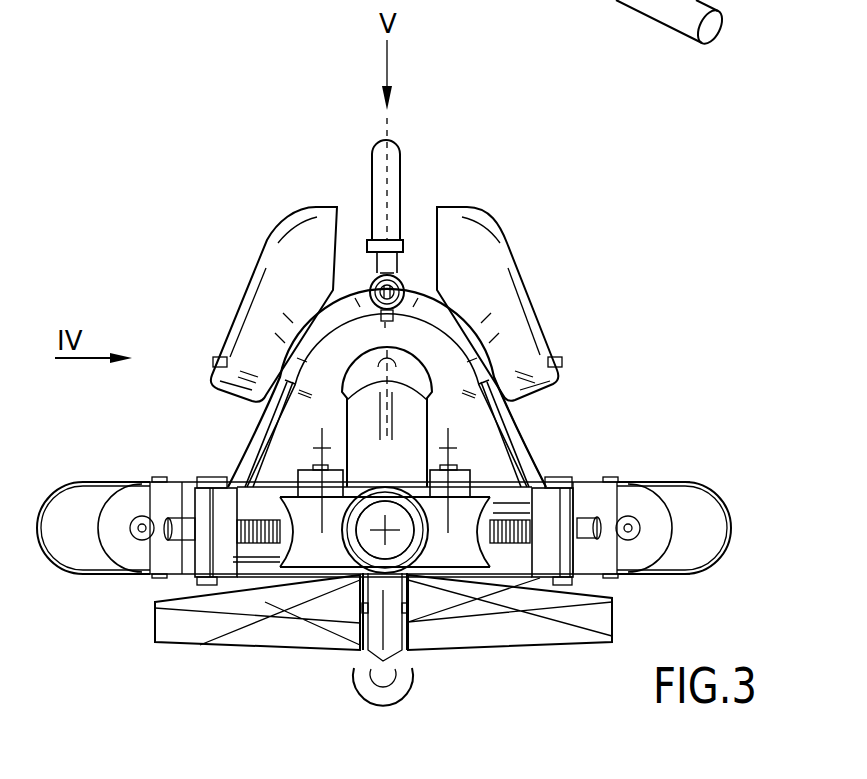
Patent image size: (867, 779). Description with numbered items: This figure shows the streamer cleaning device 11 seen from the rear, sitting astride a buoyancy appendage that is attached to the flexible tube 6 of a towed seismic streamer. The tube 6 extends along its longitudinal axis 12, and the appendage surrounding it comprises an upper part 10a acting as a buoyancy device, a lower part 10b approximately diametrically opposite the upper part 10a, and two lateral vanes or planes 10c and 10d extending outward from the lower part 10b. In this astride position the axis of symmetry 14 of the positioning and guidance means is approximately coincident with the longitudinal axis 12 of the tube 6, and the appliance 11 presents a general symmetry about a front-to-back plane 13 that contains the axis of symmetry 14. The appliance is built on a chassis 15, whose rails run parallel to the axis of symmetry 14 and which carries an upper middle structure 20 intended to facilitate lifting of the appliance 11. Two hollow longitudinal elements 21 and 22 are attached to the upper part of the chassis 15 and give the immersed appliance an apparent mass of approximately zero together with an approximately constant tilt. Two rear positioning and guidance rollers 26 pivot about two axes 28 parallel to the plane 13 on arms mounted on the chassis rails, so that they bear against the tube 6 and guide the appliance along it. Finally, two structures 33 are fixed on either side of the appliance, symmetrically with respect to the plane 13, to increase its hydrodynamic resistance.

The flexible tube 6 is at (746, 0).
The upper part 10a is at (443, 343).
The lower part 10b is at (388, 704).
The lateral part 10c is at (154, 612).
The lateral part 10d is at (614, 616).
The streamer cleaning device 11 is at (606, 292).
The longitudinal axis 12 is at (384, 480).
The front-to-back plane 13 is at (380, 128).
The axis of symmetry 14 is at (387, 498).
The chassis 15 is at (515, 428).
The upper middle structure 20 is at (398, 160).
The hollow longitudinal element 21 is at (263, 246).
The hollow longitudinal element 22 is at (507, 237).
The rear positioning and guidance roller 26 is at (315, 572).
The axis 28 is at (265, 416).
The structure for increasing hydrodynamic resistance 33 is at (90, 481).